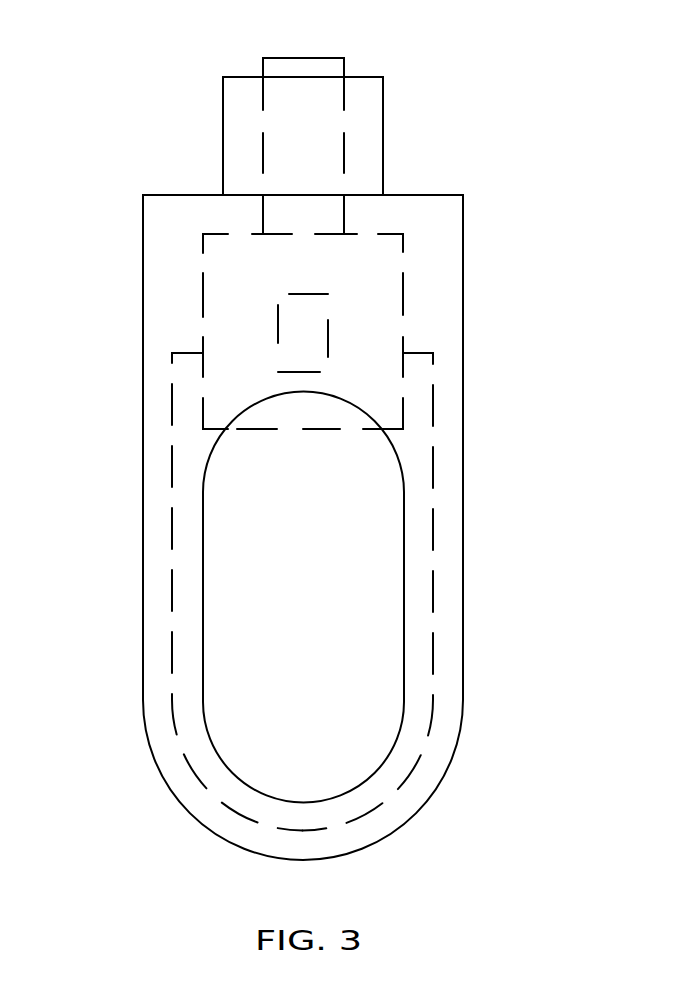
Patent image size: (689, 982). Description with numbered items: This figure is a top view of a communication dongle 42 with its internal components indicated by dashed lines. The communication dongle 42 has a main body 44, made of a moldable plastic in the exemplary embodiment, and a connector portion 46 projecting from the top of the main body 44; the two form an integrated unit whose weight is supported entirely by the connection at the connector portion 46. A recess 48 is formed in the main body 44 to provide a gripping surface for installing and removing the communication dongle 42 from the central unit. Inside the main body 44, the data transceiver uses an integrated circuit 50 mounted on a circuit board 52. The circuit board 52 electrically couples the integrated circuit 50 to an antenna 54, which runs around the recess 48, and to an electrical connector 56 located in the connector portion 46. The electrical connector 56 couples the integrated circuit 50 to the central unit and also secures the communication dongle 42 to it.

The communication dongle 42 is at (127, 47).
The main body 44 is at (148, 738).
The connector portion 46 is at (222, 122).
The recess 48 is at (323, 693).
The integrated circuit 50 is at (303, 322).
The circuit board 52 is at (403, 251).
The antenna 54 is at (433, 530).
The electrical connector 56 is at (344, 137).